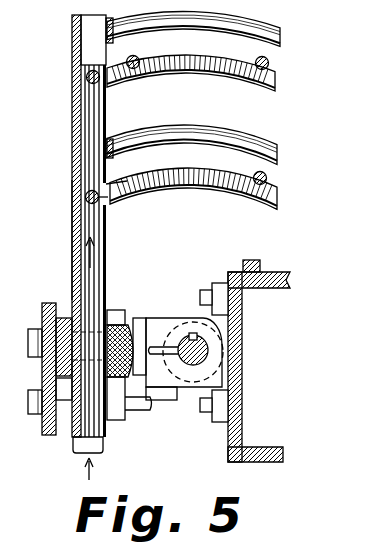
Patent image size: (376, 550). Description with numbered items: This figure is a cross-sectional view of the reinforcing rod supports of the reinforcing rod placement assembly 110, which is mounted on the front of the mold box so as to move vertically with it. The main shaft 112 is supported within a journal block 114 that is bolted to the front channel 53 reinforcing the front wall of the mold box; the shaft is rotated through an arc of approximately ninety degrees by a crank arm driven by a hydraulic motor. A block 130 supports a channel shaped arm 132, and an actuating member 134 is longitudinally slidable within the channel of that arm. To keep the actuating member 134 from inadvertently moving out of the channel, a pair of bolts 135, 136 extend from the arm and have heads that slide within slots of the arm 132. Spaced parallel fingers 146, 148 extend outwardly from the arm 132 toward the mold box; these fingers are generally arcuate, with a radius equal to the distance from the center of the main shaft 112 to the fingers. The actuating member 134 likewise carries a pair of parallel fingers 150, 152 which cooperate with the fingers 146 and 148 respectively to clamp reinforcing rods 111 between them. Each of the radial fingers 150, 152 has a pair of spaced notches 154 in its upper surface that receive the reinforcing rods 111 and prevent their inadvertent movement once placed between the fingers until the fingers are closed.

The front channel 53 is at (243, 322).
The reinforcing rod placement assembly 110 is at (62, 48).
The reinforcing rod 111 is at (141, 60).
The main shaft 112 is at (191, 362).
The journal block 114 is at (204, 320).
The block 130 is at (67, 168).
The channel shaped arm 132 is at (73, 208).
The actuating member 134 is at (88, 121).
The bolt 135 is at (86, 77).
The bolt 136 is at (108, 197).
The finger 146 is at (278, 150).
The finger 148 is at (281, 30).
The finger 150 is at (277, 200).
The finger 152 is at (277, 80).
The notch 154 is at (264, 72).